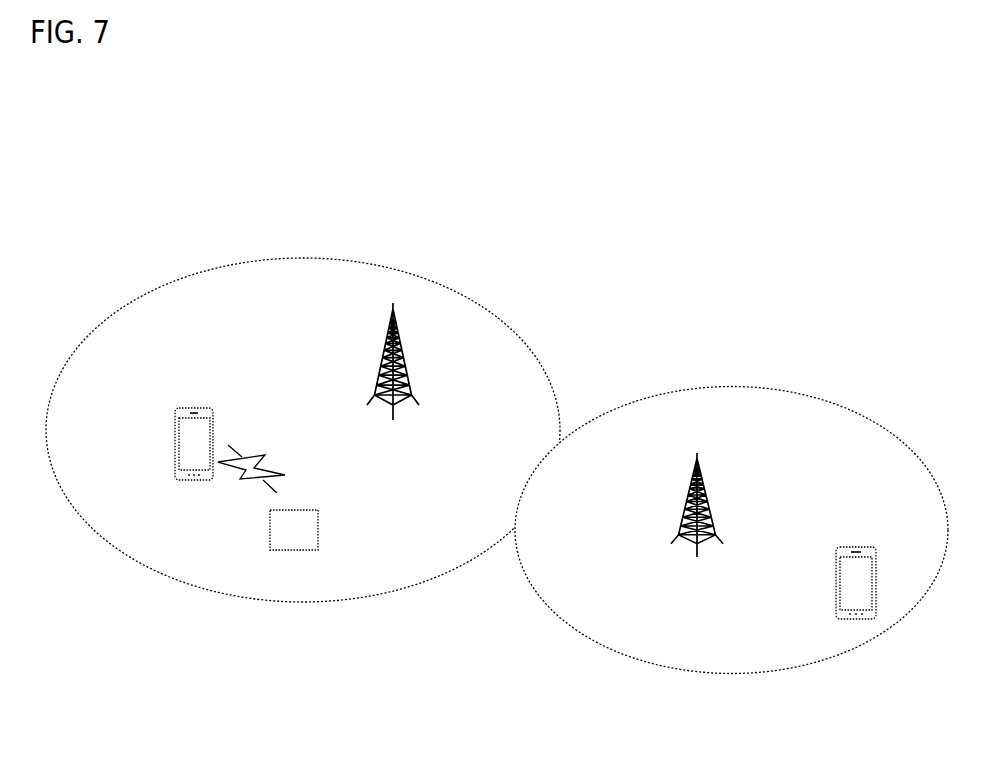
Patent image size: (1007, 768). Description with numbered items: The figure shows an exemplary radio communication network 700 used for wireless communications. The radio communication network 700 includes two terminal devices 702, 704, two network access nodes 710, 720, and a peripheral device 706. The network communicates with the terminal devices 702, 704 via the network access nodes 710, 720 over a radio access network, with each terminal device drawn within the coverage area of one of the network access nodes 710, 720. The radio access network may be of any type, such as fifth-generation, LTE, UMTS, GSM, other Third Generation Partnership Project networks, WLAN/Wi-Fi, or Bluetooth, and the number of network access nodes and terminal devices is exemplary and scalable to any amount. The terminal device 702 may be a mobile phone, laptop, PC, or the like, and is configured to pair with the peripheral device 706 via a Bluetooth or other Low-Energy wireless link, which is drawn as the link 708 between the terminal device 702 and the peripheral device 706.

The radio communication network 700 is at (747, 215).
The terminal device 702 is at (200, 405).
The terminal device 704 is at (855, 545).
The peripheral device 706 is at (293, 509).
The sidelink communication 708 is at (258, 460).
The network access node 710 is at (405, 357).
The network access node 720 is at (709, 487).